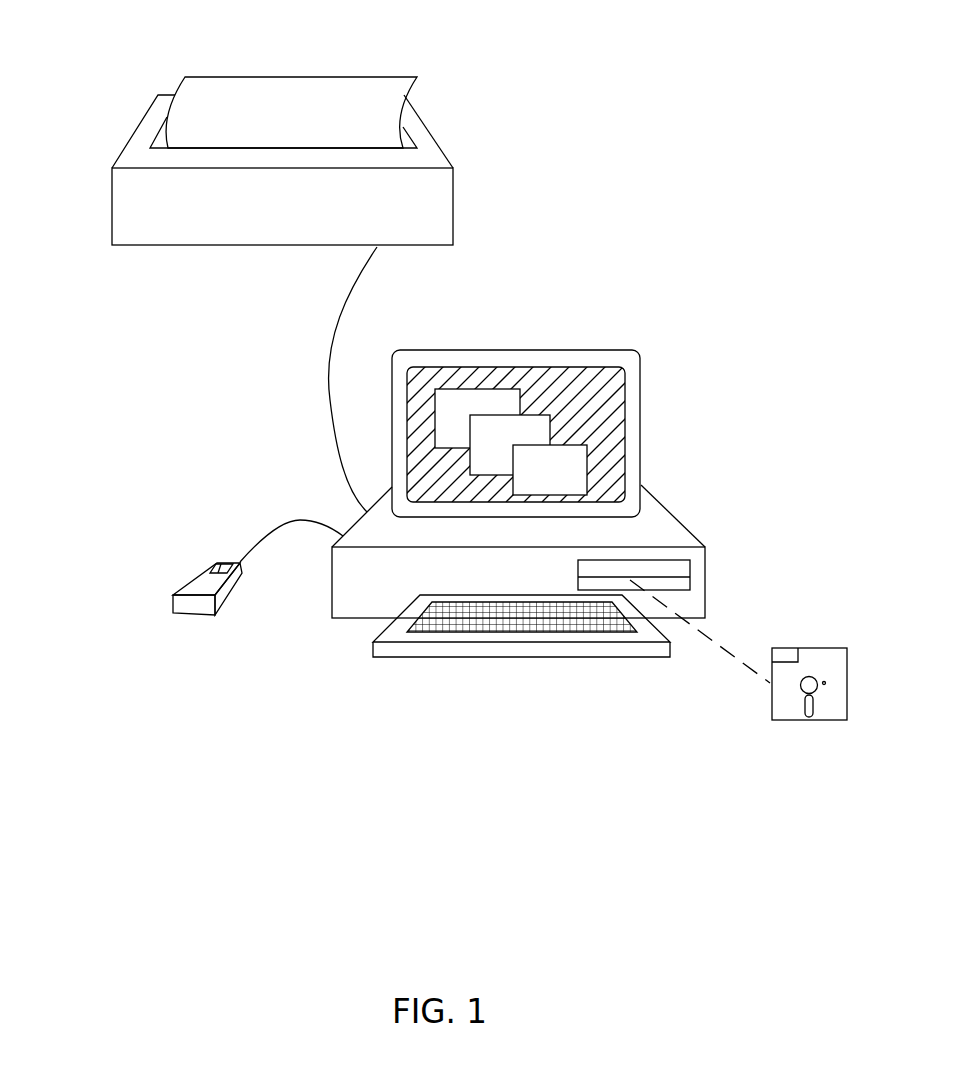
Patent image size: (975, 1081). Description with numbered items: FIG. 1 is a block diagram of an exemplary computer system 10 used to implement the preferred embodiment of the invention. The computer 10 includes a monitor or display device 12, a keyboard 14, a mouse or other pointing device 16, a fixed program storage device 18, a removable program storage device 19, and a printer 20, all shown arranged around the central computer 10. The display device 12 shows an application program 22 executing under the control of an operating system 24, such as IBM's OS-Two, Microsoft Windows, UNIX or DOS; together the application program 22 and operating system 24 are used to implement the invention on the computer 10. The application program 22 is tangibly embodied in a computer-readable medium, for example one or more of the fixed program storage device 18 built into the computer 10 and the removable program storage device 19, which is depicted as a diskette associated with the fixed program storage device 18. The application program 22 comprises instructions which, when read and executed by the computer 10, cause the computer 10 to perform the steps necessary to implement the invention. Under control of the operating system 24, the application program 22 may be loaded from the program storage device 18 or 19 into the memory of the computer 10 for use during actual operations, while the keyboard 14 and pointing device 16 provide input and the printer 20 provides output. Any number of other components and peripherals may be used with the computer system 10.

The computer system 10 is at (275, 443).
The display device 12 is at (507, 348).
The keyboard 14 is at (557, 663).
The pointing device 16 is at (182, 623).
The fixed program storage device 18 is at (702, 577).
The removable program storage device 19 is at (790, 720).
The printer 20 is at (125, 143).
The application program 22 is at (570, 443).
The operating system 24 is at (568, 388).